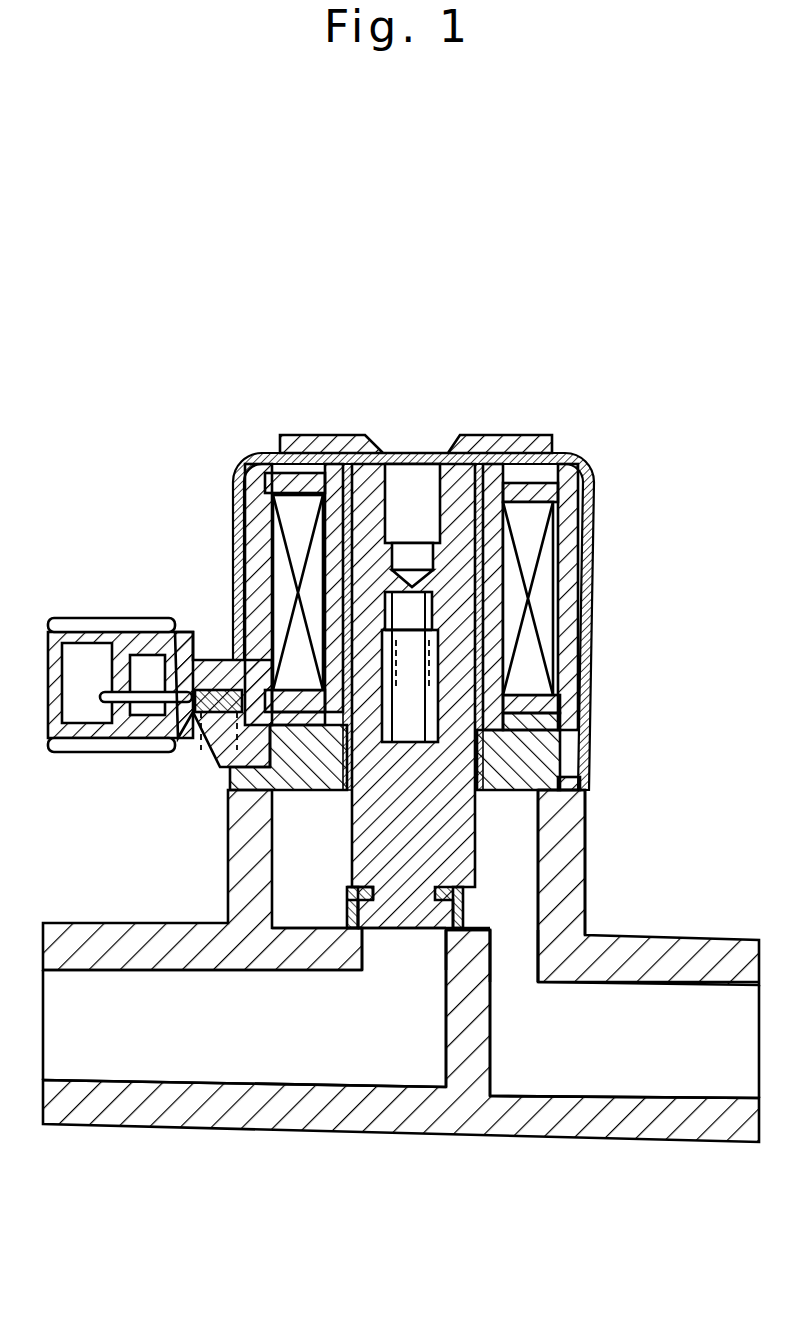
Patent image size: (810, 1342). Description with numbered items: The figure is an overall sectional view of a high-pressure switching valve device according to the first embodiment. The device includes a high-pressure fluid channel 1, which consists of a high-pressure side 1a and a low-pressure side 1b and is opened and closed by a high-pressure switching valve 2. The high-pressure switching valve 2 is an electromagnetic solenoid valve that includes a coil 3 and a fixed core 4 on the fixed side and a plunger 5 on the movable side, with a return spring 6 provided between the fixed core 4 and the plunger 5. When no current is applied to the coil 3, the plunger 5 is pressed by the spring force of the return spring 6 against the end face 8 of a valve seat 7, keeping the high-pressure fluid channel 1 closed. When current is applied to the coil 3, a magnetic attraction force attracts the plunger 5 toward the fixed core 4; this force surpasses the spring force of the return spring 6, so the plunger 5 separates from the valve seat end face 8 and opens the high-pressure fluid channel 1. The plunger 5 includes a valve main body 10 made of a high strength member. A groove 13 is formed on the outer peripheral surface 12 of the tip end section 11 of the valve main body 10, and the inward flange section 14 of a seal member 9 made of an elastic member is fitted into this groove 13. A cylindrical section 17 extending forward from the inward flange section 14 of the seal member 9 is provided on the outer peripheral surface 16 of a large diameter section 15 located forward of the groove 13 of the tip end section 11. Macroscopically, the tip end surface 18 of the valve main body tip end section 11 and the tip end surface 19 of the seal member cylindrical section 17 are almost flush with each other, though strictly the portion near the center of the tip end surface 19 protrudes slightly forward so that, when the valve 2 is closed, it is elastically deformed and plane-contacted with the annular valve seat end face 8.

The high-pressure fluid channel 1 is at (404, 1147).
The high-pressure side 1a is at (633, 1052).
The low-pressure side 1b is at (230, 1055).
The high-pressure switching valve 2 is at (606, 528).
The coil 3 is at (300, 518).
The fixed core 4 is at (467, 434).
The plunger 5 is at (484, 826).
The return spring 6 is at (438, 614).
The valve seat 7 is at (490, 968).
The valve seat end face 8 is at (480, 933).
The seal member 9 is at (333, 892).
The valve main body 10 is at (345, 798).
The tip end section 11 is at (400, 932).
The outer peripheral surface 12 is at (467, 935).
The groove 13 is at (468, 893).
The inward flange section 14 is at (437, 932).
The large diameter section 15 is at (450, 932).
The outer peripheral surface 16 is at (347, 912).
The cylindrical section 17 is at (345, 886).
The tip end surface 18 is at (368, 935).
The tip end surface 19 is at (355, 932).